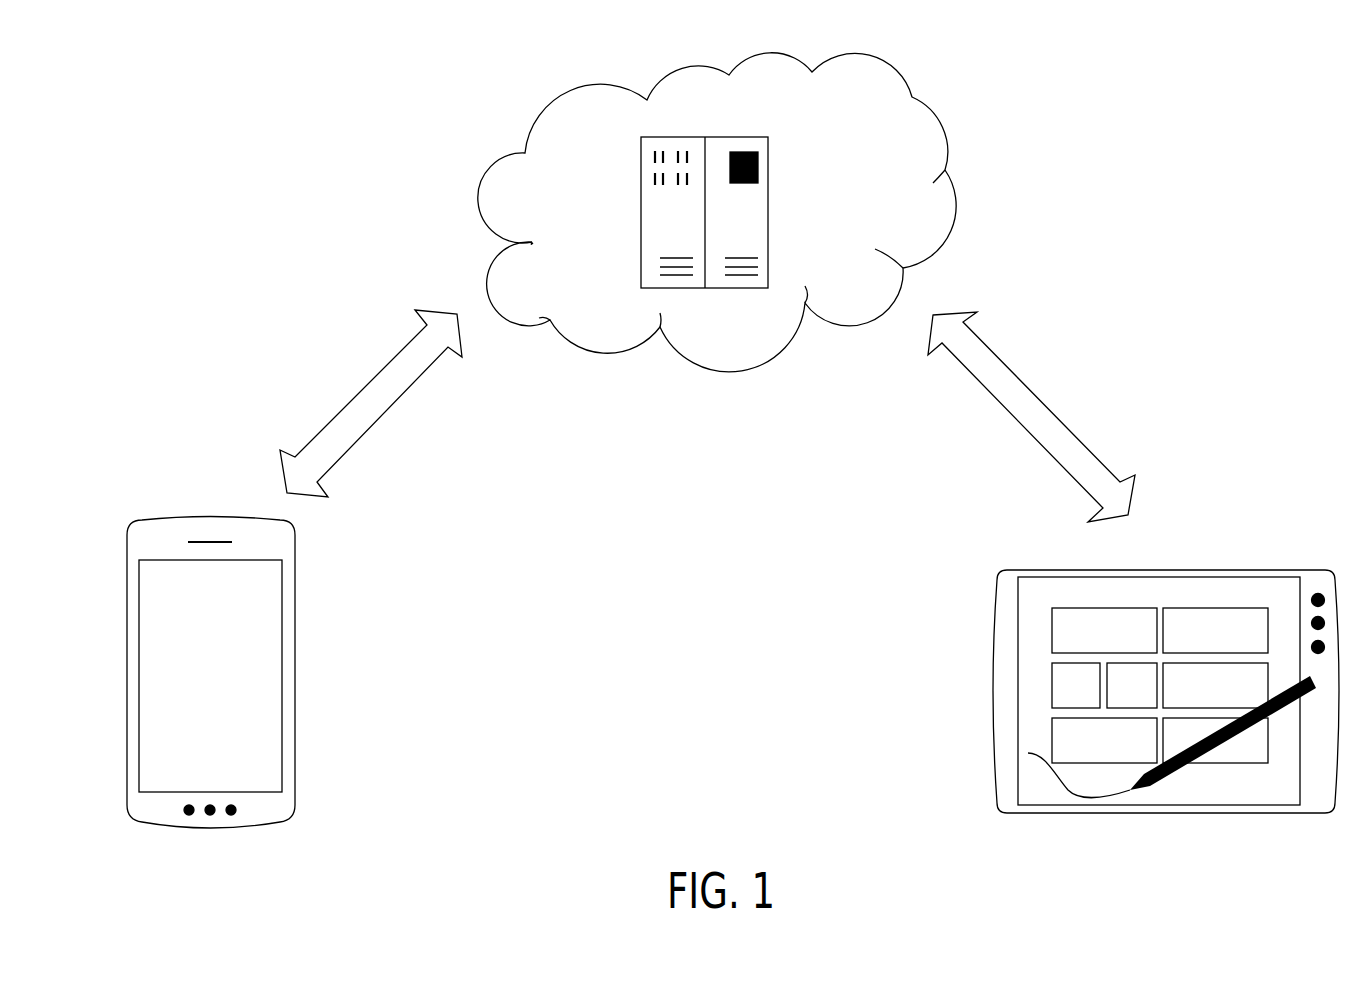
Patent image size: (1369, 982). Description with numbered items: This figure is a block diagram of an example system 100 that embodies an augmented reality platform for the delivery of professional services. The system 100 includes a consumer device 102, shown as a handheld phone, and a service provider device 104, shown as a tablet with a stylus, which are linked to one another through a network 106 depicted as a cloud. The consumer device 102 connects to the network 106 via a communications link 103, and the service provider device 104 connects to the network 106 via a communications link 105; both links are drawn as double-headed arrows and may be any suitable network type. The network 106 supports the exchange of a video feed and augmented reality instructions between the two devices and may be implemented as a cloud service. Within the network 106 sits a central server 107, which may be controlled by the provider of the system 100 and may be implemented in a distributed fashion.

The system 100 is at (300, 96).
The consumer device 102 is at (293, 635).
The communications link 103 is at (371, 403).
The service provider device 104 is at (988, 663).
The communications link 105 is at (1031, 417).
The network 106 is at (942, 110).
The central server 107 is at (680, 137).